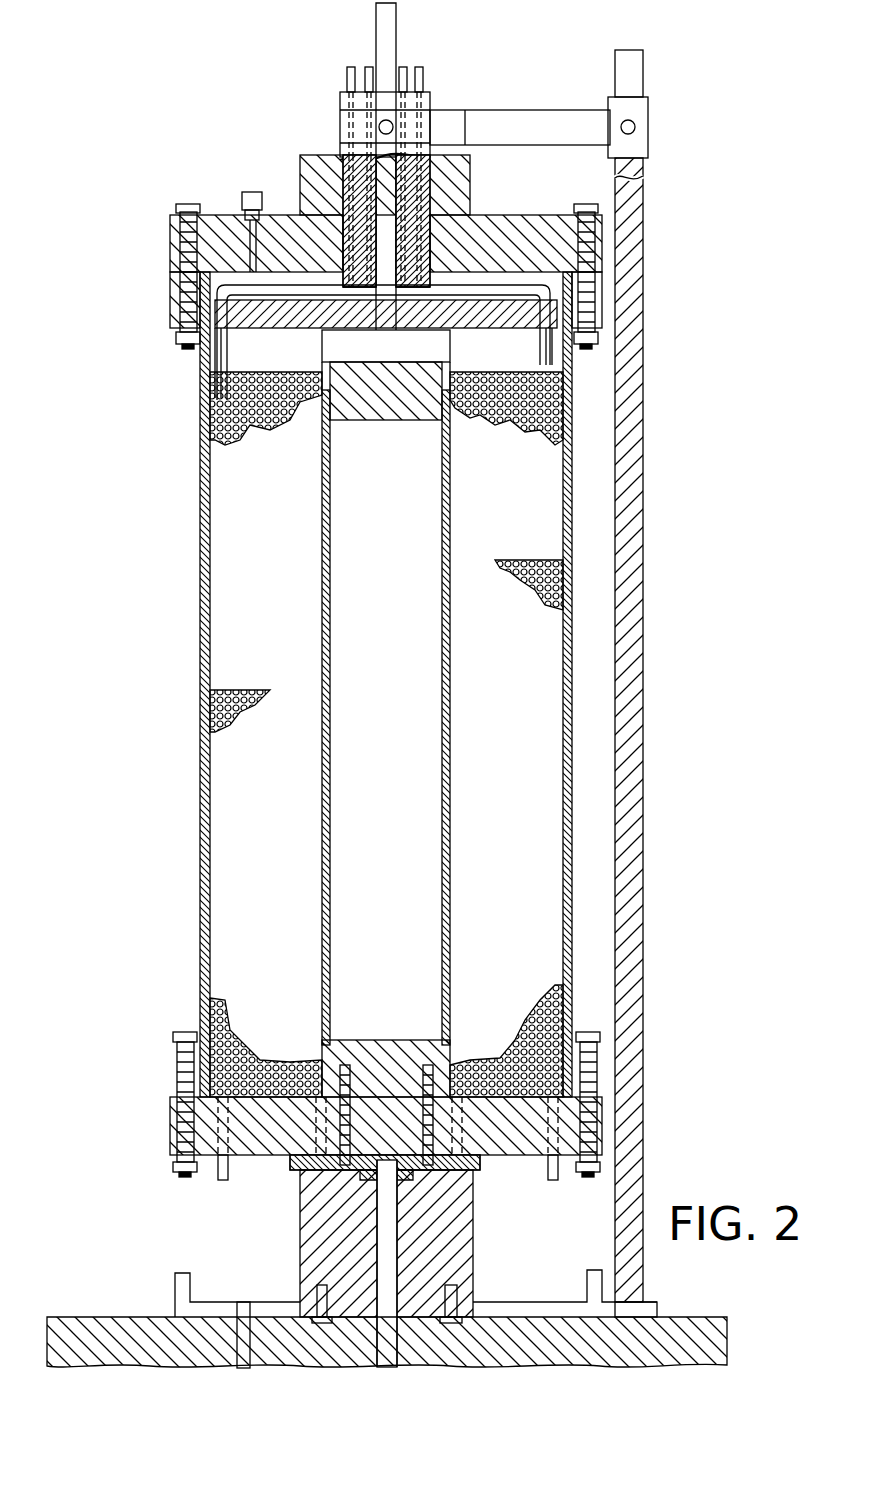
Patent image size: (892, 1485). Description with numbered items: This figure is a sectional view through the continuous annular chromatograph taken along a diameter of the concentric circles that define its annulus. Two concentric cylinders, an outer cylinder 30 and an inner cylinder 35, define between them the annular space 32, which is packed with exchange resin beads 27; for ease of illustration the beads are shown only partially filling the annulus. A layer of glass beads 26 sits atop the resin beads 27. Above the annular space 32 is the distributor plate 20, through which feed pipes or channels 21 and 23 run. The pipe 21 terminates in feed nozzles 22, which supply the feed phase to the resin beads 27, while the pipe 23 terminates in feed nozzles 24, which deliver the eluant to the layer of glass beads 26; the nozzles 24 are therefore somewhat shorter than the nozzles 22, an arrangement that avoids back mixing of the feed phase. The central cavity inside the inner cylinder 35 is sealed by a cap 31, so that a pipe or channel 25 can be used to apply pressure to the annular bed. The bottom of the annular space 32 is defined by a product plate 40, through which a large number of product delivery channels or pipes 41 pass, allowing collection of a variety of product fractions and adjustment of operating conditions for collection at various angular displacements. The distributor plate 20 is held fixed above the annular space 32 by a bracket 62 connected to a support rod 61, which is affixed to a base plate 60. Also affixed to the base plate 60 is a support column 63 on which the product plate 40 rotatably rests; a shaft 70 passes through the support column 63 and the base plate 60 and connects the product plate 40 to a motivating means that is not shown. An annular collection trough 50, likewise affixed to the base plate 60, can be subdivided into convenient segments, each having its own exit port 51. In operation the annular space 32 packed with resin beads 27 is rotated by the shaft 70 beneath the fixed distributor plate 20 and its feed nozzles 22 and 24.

The distributor plate 20 is at (340, 126).
The feed pipe 21 is at (368, 68).
The feed nozzle 22 is at (200, 358).
The feed pipe 23 is at (424, 73).
The feed nozzle 24 is at (580, 357).
The pipe 25 is at (398, 8).
The glass beads 26 is at (244, 372).
The exchange resin beads 27 is at (552, 438).
The outer cylinder 30 is at (205, 803).
The cap 31 is at (398, 412).
The annular space 32 is at (250, 518).
The inner cylinder 35 is at (330, 716).
The product plate 40 is at (172, 1146).
The product delivery channels 41 is at (228, 1170).
The annular collection trough 50 is at (175, 1292).
The exit port 51 is at (246, 1368).
The base plate 60 is at (727, 1345).
The support rod 61 is at (643, 670).
The bracket 62 is at (513, 110).
The support column 63 is at (473, 1222).
The shaft 70 is at (387, 1345).